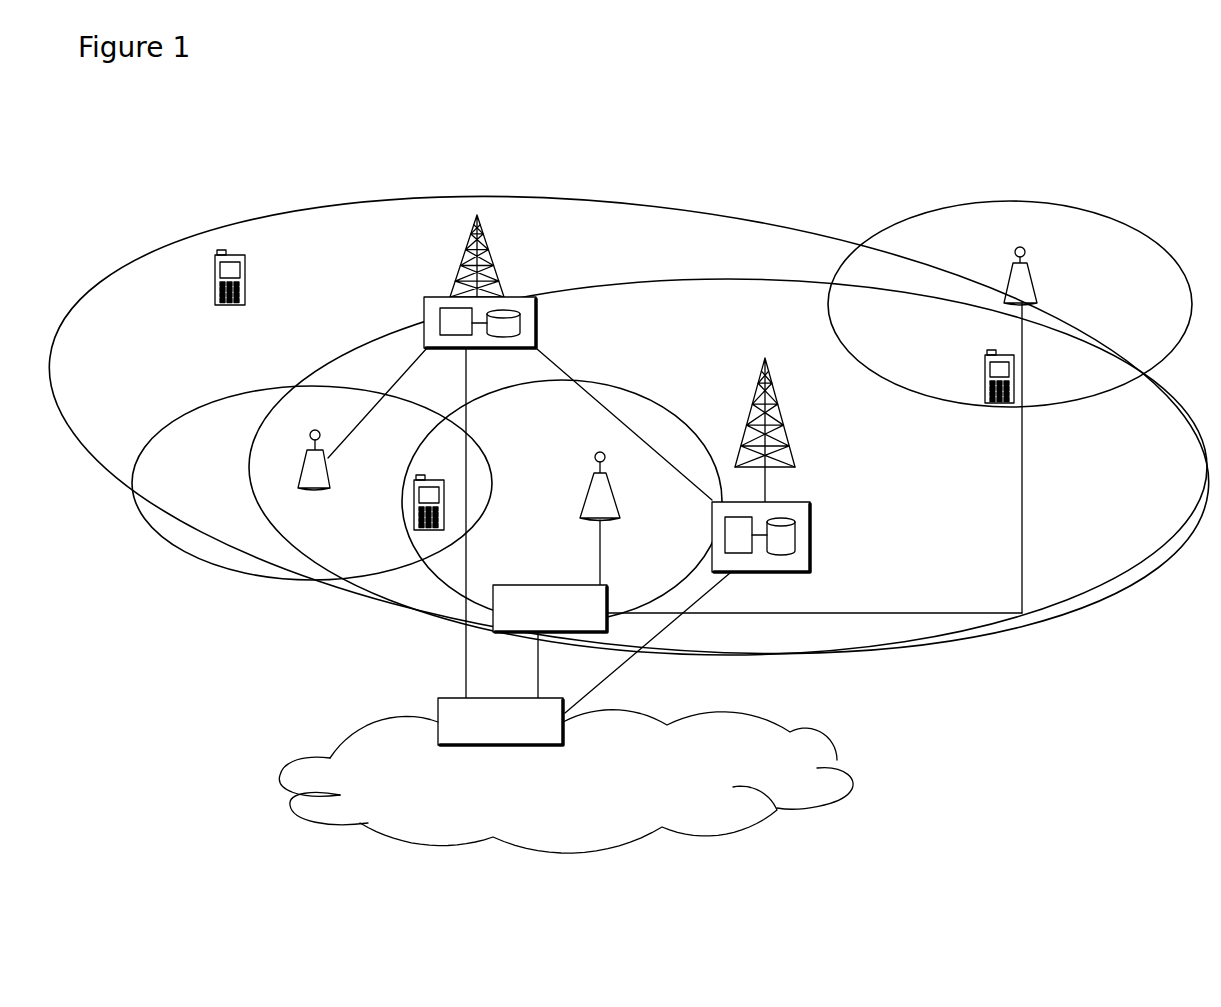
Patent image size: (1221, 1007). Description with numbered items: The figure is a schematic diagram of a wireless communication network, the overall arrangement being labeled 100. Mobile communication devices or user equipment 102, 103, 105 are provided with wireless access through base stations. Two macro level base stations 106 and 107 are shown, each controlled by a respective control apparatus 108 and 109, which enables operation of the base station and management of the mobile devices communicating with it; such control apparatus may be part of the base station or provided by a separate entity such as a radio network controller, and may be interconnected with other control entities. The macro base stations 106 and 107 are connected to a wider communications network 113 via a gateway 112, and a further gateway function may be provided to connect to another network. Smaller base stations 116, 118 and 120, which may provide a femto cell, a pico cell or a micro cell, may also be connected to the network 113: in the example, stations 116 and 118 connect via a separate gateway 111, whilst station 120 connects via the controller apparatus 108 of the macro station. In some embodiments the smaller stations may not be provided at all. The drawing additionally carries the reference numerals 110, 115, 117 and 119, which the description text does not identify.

The wireless communication system 100 is at (140, 241).
The mobile communication device 102 is at (213, 297).
The mobile communication device 103 is at (413, 512).
The mobile communication device 105 is at (997, 403).
The macro level base station 106 is at (457, 290).
The macro level base station 107 is at (785, 435).
The control apparatus 108 is at (424, 311).
The control apparatus 109 is at (800, 560).
The coverage area 110 is at (1085, 605).
The gateway 111 is at (493, 615).
The gateway 112 is at (438, 697).
The wider communications network 113 is at (362, 752).
The coverage area 115 is at (1161, 226).
The smaller base station 116 is at (1007, 278).
The coverage area 117 is at (633, 392).
The smaller base station 118 is at (590, 497).
The coverage area 119 is at (215, 562).
The smaller base station 120 is at (300, 462).